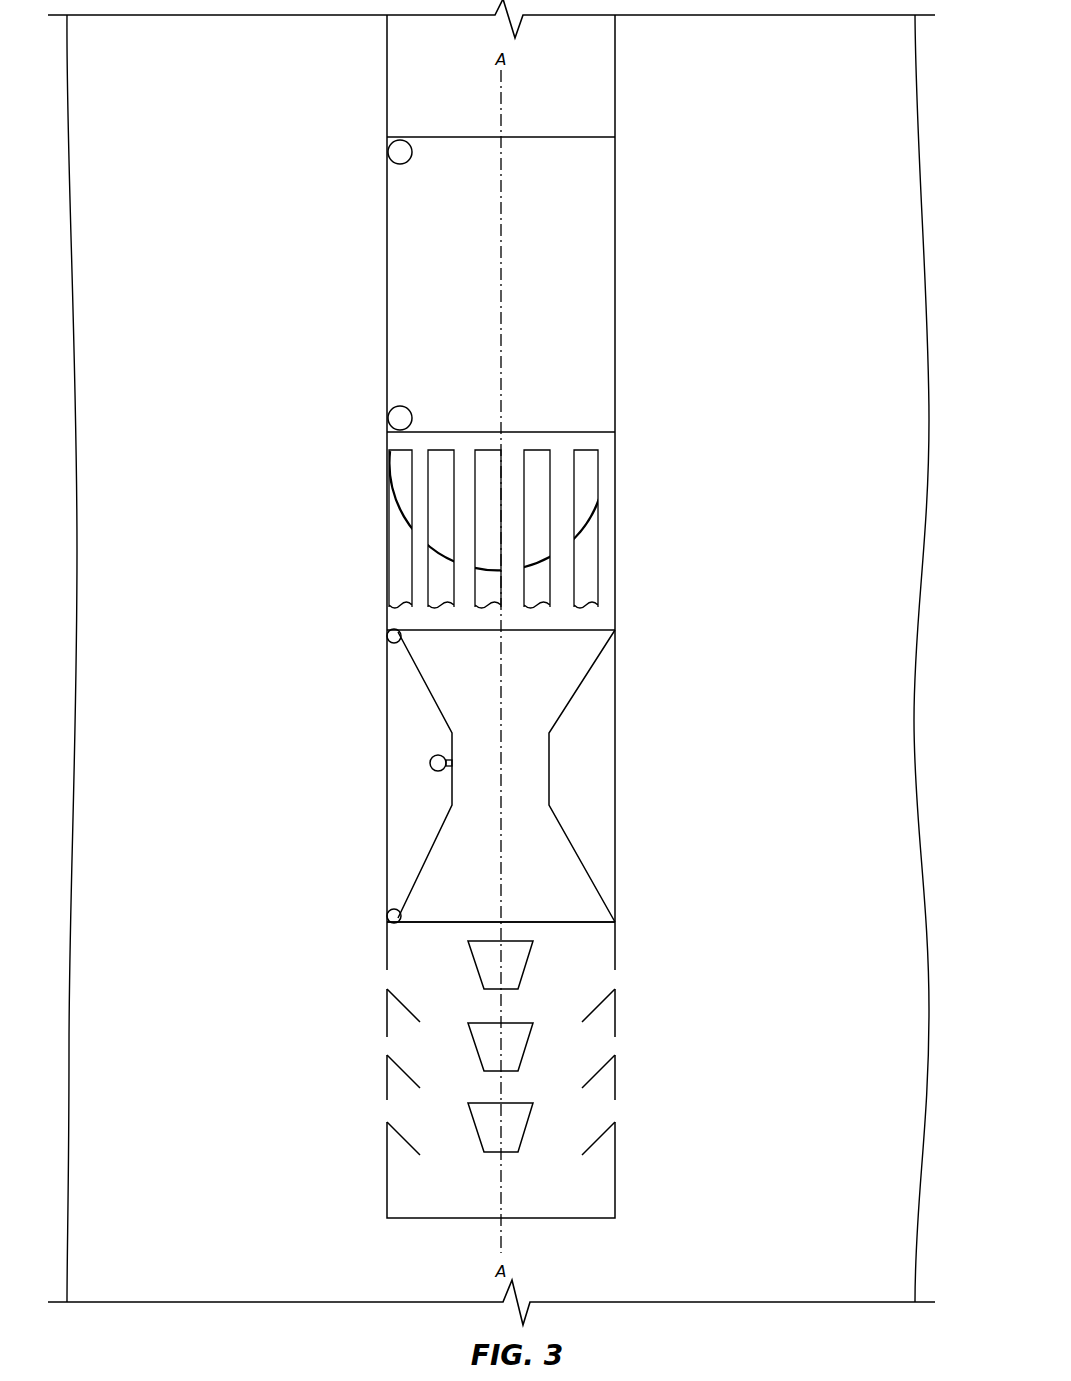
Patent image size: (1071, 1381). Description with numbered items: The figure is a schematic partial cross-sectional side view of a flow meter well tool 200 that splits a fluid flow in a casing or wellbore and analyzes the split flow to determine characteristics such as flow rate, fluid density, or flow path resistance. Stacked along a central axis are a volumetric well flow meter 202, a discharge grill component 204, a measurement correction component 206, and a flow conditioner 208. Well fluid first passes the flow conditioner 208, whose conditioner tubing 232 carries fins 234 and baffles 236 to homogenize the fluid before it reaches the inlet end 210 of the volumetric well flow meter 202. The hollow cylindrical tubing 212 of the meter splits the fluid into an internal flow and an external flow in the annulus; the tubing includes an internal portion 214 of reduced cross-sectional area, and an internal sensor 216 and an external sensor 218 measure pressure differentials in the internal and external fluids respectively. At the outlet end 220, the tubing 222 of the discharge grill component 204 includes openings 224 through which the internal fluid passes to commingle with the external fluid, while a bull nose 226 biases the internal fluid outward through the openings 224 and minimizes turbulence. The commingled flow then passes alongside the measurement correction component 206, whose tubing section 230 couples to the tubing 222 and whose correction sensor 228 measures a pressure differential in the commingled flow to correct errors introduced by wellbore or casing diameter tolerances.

The flow meter well tool 200 is at (205, 195).
The volumetric well flow meter 202 is at (656, 758).
The discharge grill component 204 is at (648, 494).
The measurement correction component 206 is at (638, 279).
The flow conditioner 208 is at (641, 1065).
The inlet end 210 is at (575, 945).
The hollow cylindrical tubing 212 is at (387, 832).
The internal portion 214 is at (452, 782).
The internal sensor 216 is at (430, 762).
The external sensor 218 is at (387, 637).
The outlet end 220 is at (572, 614).
The tubing 222 is at (617, 547).
The openings 224 is at (438, 575).
The bull nose 226 is at (400, 488).
The correction sensor 228 is at (392, 161).
The tubing section 230 is at (617, 343).
The conditioner tubing 232 is at (386, 1178).
The fins 234 is at (408, 1012).
The baffles 236 is at (472, 1128).